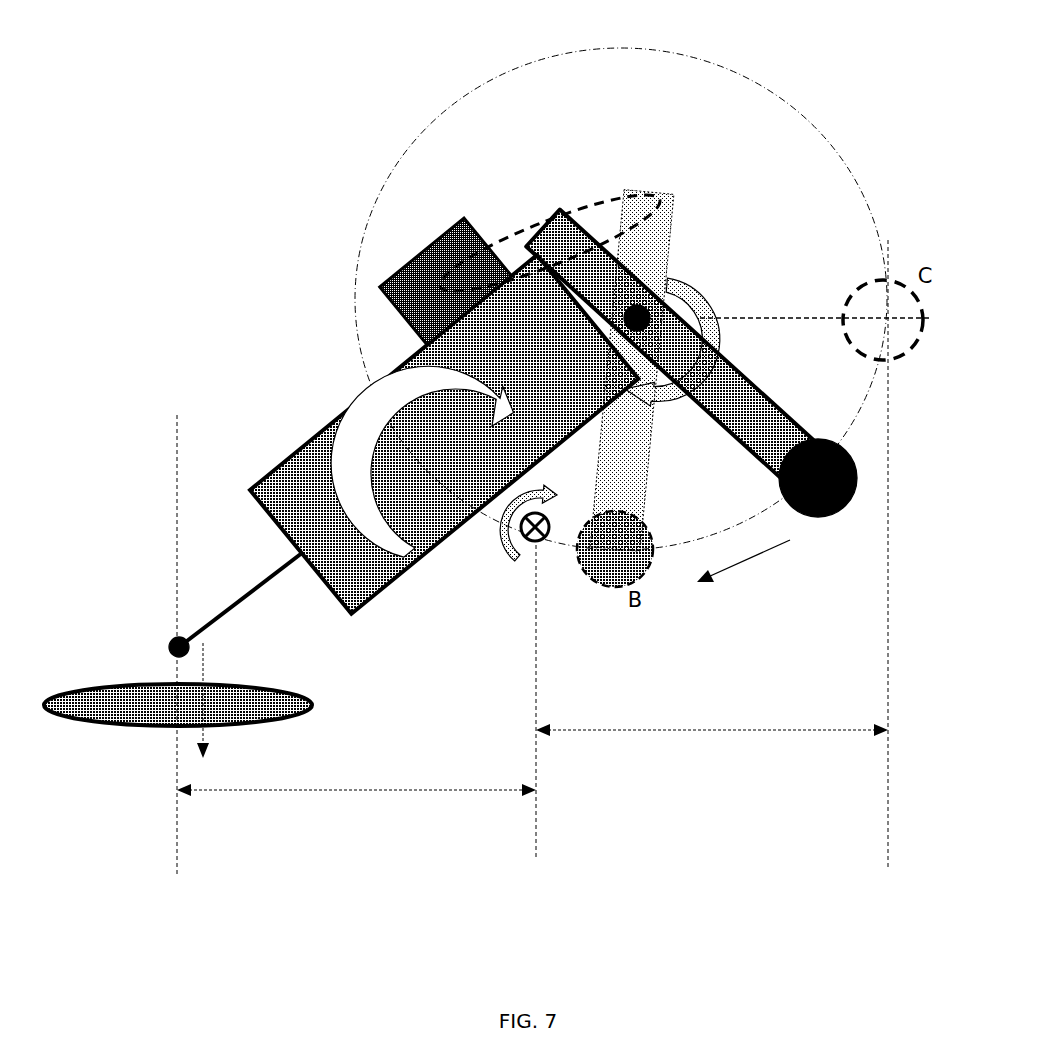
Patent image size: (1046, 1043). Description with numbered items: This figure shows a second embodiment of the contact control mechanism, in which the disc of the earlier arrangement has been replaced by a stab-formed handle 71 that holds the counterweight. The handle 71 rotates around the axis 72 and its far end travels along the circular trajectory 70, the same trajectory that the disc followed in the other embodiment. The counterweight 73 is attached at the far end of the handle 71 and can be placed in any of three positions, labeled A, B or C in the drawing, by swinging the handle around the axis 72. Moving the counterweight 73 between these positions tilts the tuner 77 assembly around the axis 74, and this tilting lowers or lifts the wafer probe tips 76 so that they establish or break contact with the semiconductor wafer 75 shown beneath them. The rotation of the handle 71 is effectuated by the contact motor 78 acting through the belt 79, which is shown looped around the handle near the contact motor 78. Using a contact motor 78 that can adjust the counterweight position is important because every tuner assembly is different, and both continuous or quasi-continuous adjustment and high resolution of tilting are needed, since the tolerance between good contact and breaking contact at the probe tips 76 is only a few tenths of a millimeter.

The trajectory 70 is at (818, 133).
The handle 71 is at (722, 360).
The axis 72 is at (667, 262).
The counterweight 73 is at (848, 503).
The axis 74 is at (540, 545).
The semiconductor wafer 75 is at (118, 730).
The wafer probe tips 76 is at (172, 632).
The tuner 77 is at (353, 407).
The contact motor 78 is at (422, 248).
The belt 79 is at (585, 205).